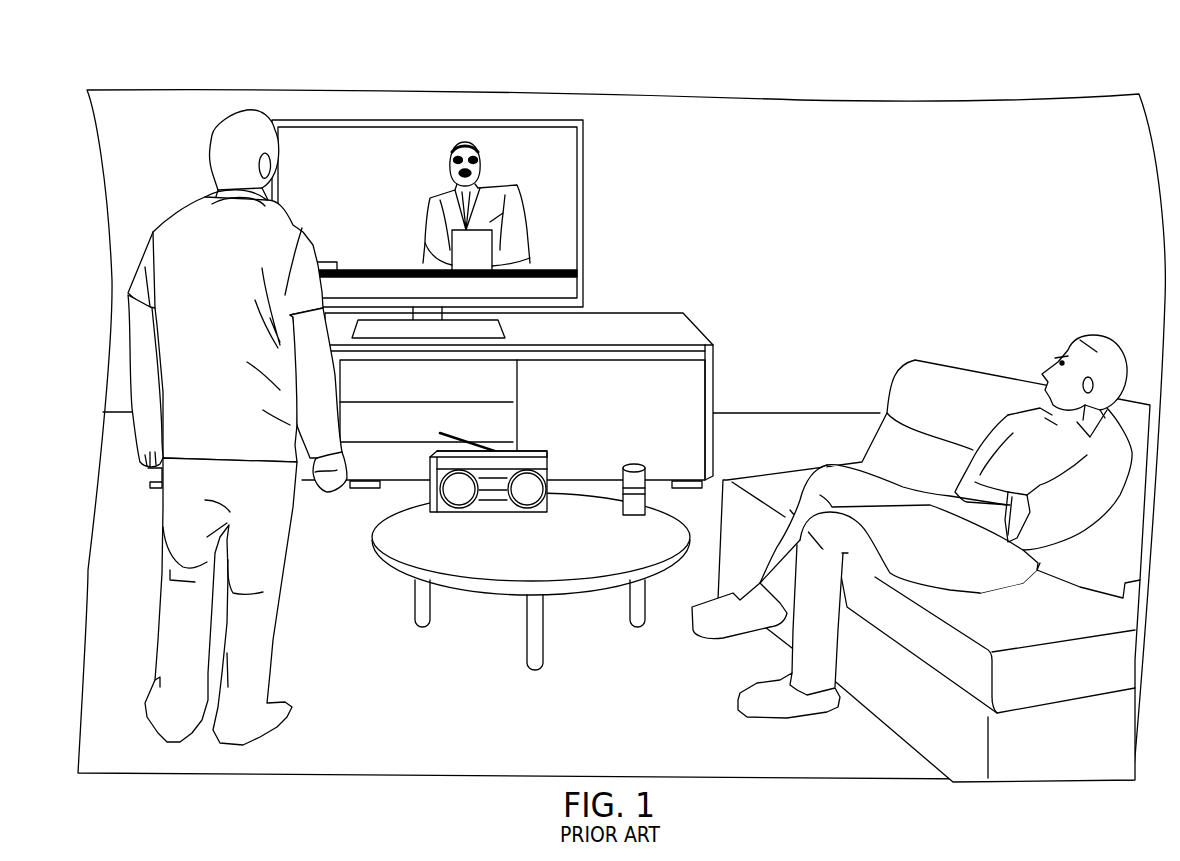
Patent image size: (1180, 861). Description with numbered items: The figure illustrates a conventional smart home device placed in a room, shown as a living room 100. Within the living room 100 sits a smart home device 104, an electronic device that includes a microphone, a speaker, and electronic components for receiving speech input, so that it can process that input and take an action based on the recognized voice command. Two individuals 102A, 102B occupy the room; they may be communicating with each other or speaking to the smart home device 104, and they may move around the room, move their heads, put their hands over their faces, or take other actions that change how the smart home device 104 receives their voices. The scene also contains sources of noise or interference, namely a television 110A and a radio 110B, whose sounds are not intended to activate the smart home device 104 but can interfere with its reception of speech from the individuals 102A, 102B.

The living room 100 is at (1022, 95).
The individual 102A is at (1097, 333).
The individual 102B is at (212, 137).
The smart home device 104 is at (628, 515).
The television 110A is at (587, 193).
The radio 110B is at (524, 513).